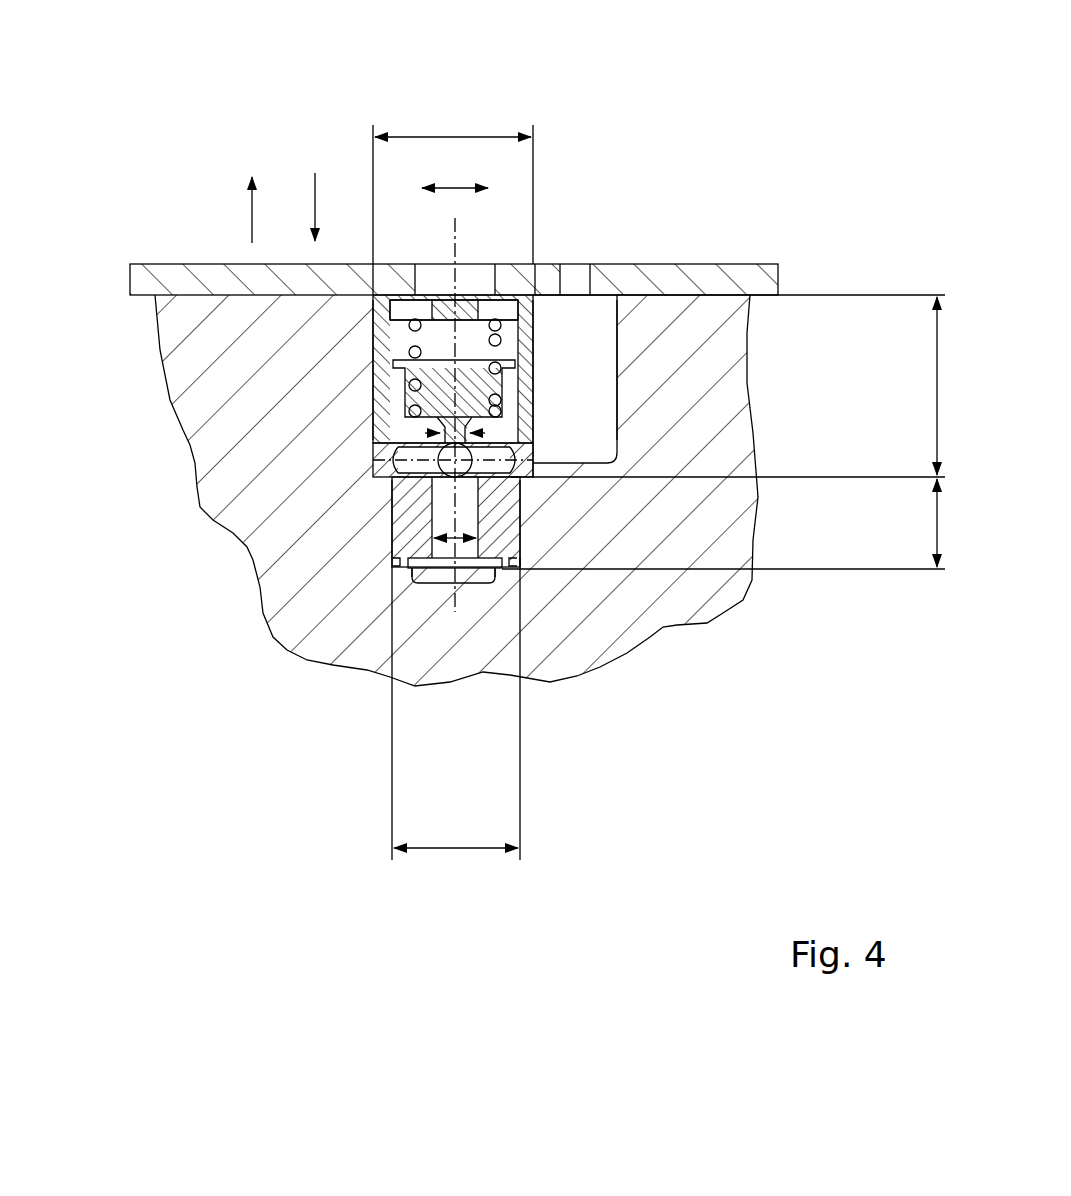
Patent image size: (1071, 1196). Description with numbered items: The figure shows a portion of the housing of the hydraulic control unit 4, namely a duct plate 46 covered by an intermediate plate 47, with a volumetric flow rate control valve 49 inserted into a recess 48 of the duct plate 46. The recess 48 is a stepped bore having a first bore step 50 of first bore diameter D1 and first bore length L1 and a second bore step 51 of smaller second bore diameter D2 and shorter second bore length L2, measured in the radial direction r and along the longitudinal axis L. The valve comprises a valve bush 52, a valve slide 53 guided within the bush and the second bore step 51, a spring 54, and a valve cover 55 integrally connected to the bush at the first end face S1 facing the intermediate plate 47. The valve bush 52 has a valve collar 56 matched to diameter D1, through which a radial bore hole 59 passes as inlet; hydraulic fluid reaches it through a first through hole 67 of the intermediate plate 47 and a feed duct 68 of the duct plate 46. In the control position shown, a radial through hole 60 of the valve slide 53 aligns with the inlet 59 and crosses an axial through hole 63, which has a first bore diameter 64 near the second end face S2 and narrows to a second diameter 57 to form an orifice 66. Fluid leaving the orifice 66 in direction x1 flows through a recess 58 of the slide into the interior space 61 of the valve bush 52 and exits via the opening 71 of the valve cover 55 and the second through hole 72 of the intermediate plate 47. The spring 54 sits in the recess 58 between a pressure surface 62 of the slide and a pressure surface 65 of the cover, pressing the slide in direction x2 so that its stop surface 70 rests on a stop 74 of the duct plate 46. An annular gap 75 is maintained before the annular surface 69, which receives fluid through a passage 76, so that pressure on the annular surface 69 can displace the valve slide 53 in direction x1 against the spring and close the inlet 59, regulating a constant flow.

The hydraulic control unit 4 is at (171, 212).
The duct plate 46 is at (318, 590).
The intermediate plate 47 is at (418, 154).
The recess 48 is at (392, 470).
The volumetric flow rate control valve 49 is at (372, 400).
The first bore step 50 is at (377, 338).
The second bore step 51 is at (392, 508).
The valve bush 52 is at (545, 399).
The valve slide 53 is at (531, 514).
The spring 54 is at (537, 332).
The valve cover 55 is at (537, 307).
The valve collar 56 is at (537, 348).
The second diameter 57 is at (398, 466).
The recess 58 is at (537, 370).
The radial bore hole 59 is at (525, 468).
The radial through hole 60 is at (375, 448).
The interior space 61 is at (402, 347).
The pressure surface 62 is at (470, 392).
The axial through hole 63 is at (392, 486).
The first bore diameter 64 is at (560, 600).
The pressure surface 65 is at (390, 316).
The orifice 66 is at (525, 503).
The first through hole 67 is at (580, 277).
The feed duct 68 is at (590, 393).
The annular surface 69 is at (423, 585).
The stop surface 70 is at (420, 606).
The opening 71 is at (442, 310).
The second through hole 72 is at (477, 280).
The stop 74 is at (396, 566).
The annular gap 75 is at (492, 588).
The passage 76 is at (442, 585).
The longitudinal axis L is at (457, 232).
The first end face S1 is at (433, 326).
The second end face S2 is at (477, 588).
The first bore diameter D1 is at (453, 181).
The second bore diameter D2 is at (456, 713).
The radial direction r is at (455, 344).
The first axial direction x1 is at (234, 210).
The second axial direction x2 is at (333, 207).
The first bore length L1 is at (757, 386).
The second bore length L2 is at (741, 524).